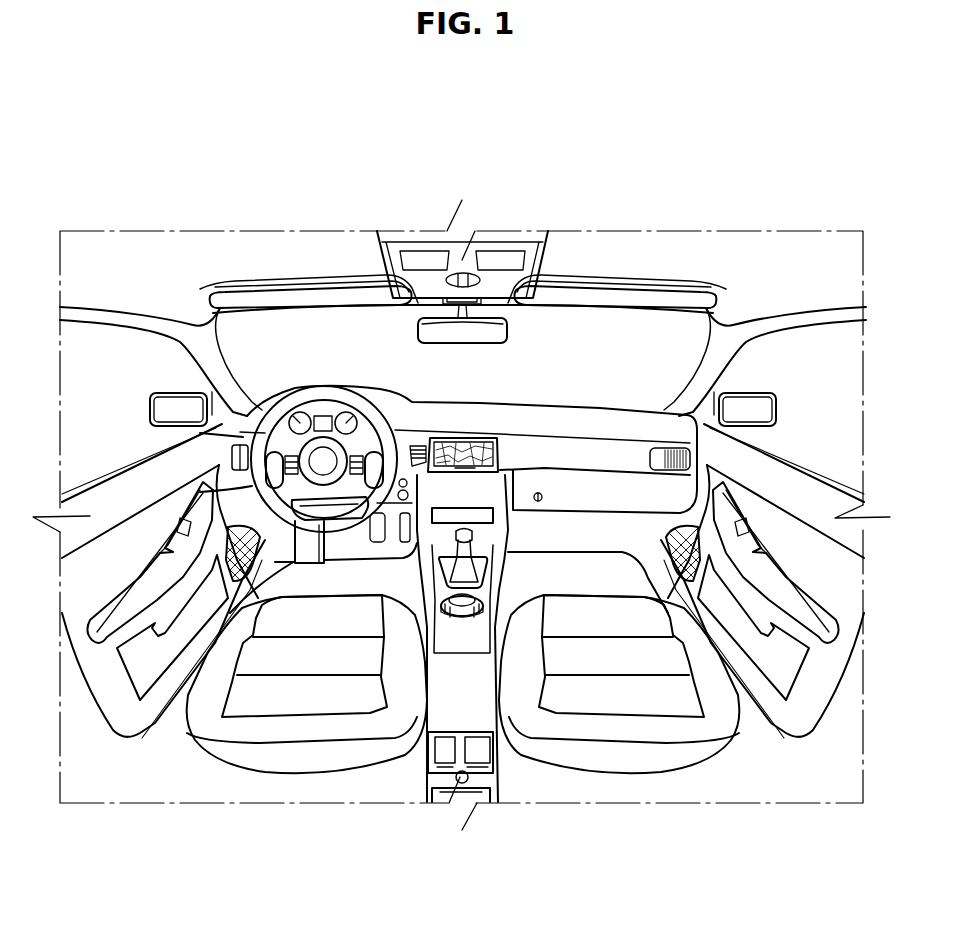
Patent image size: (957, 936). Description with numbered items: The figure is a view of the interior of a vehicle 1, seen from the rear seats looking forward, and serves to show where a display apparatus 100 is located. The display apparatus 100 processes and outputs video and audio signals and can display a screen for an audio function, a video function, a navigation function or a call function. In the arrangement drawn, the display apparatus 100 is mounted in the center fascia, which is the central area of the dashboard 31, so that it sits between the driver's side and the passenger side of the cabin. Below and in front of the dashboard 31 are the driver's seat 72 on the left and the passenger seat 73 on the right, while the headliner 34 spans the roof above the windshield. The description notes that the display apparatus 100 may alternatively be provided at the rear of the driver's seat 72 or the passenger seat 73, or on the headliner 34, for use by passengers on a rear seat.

The vehicle 1 is at (427, 114).
The dashboard 31 is at (617, 417).
The headliner 34 is at (271, 247).
The driver's seat 72 is at (280, 758).
The passenger seat 73 is at (636, 758).
The display apparatus 100 is at (473, 439).